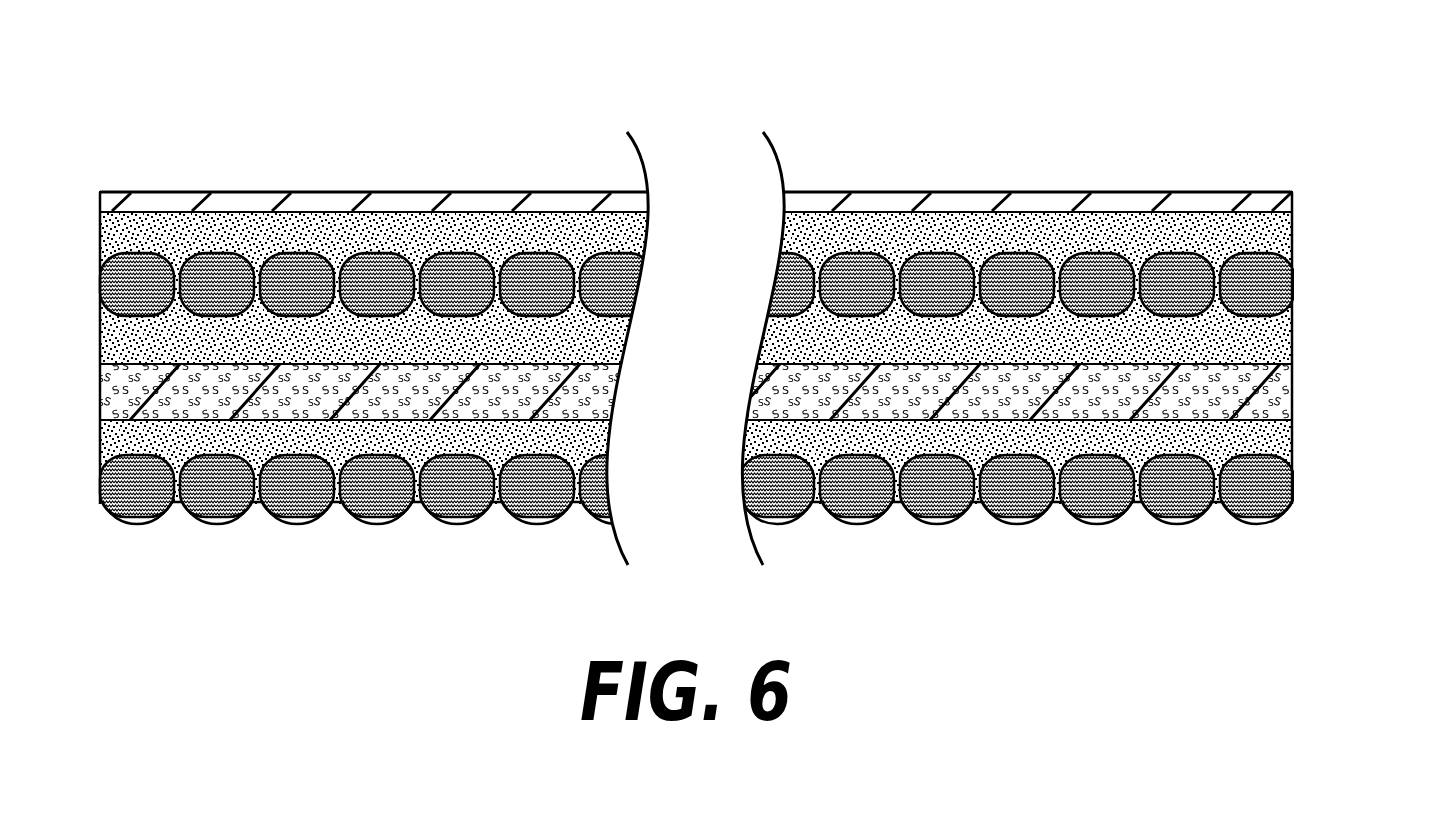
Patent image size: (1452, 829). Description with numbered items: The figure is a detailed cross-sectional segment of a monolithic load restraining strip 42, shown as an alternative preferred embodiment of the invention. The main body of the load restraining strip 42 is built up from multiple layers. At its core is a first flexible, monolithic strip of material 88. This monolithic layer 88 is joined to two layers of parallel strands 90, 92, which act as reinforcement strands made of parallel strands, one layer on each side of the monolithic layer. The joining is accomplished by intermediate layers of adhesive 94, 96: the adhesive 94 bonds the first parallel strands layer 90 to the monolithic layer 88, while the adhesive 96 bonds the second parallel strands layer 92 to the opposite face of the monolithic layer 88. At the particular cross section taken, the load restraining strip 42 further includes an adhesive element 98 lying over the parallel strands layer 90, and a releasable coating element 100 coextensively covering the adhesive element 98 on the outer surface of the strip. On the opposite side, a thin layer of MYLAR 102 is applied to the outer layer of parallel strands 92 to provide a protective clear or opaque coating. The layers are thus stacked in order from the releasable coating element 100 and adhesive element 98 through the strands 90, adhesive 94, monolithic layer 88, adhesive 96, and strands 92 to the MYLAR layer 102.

The load restraining strip 42 is at (306, 189).
The releasable coating element 100 is at (1060, 205).
The adhesive element 98 is at (1232, 228).
The parallel strands layer 90 is at (1232, 292).
The adhesive layer 94 is at (1233, 358).
The monolithic strip of material 88 is at (1250, 413).
The adhesive layer 96 is at (1263, 447).
The parallel strands layer 92 is at (1273, 497).
The thin layer of MYLAR 102 is at (1018, 520).